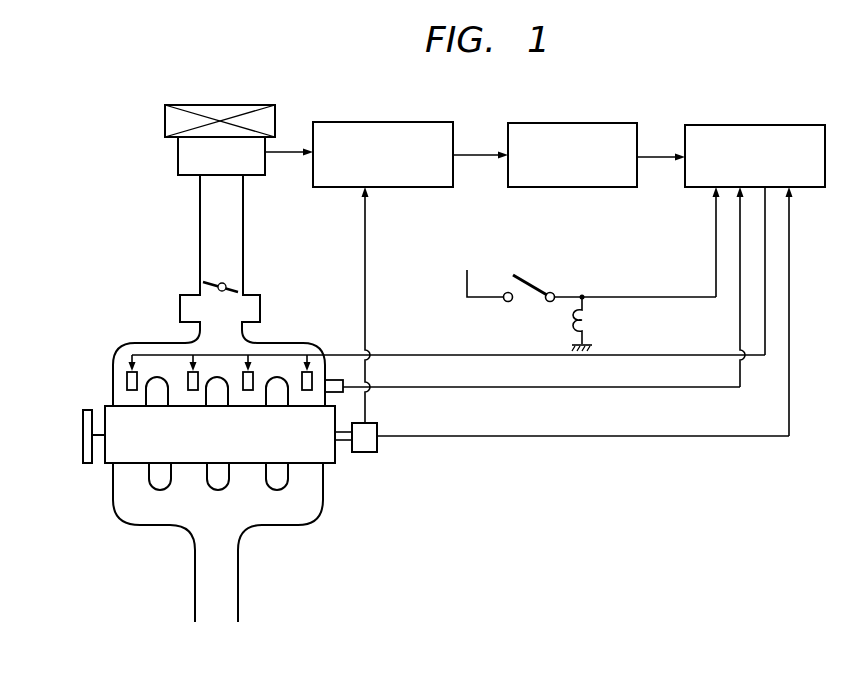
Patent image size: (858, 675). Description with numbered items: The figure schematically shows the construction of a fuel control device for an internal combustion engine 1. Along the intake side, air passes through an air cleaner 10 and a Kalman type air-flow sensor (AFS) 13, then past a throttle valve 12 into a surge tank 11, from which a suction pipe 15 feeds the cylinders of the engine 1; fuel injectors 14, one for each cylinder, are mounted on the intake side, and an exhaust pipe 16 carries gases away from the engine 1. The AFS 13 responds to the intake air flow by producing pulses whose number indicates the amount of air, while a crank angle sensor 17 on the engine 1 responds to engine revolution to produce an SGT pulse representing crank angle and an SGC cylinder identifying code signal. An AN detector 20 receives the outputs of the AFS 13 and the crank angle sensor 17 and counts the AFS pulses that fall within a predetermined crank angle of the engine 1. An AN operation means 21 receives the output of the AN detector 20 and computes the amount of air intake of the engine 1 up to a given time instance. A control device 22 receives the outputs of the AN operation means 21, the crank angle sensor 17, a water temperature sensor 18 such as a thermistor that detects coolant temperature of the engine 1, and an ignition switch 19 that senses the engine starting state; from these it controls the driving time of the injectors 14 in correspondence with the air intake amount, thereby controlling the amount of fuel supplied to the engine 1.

The engine 1 is at (335, 460).
The air cleaner 10 is at (165, 121).
The surge tank 11 is at (180, 308).
The throttle valve 12 is at (227, 287).
The Kalman type air-flow sensor (AFS) 13 is at (178, 158).
The fuel injectors 14 is at (127, 377).
The suction pipe 15 is at (122, 348).
The exhaust pipe 16 is at (323, 508).
The crank angle sensor 17 is at (377, 430).
The water temperature sensor 18 is at (335, 379).
The ignition switch 19 is at (533, 283).
The AN detector 20 is at (415, 122).
The AN operation means 21 is at (590, 123).
The control device 22 is at (770, 125).